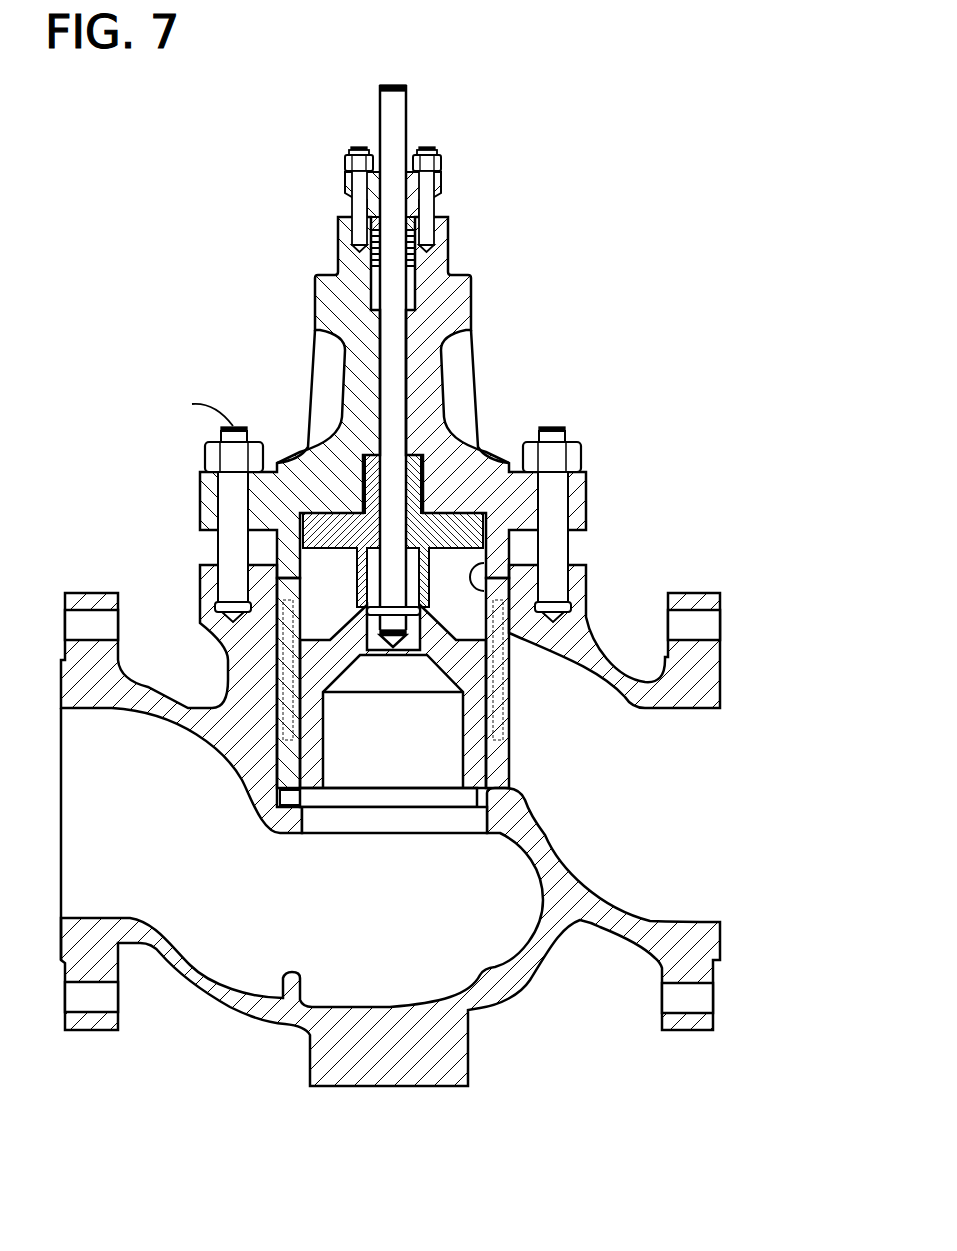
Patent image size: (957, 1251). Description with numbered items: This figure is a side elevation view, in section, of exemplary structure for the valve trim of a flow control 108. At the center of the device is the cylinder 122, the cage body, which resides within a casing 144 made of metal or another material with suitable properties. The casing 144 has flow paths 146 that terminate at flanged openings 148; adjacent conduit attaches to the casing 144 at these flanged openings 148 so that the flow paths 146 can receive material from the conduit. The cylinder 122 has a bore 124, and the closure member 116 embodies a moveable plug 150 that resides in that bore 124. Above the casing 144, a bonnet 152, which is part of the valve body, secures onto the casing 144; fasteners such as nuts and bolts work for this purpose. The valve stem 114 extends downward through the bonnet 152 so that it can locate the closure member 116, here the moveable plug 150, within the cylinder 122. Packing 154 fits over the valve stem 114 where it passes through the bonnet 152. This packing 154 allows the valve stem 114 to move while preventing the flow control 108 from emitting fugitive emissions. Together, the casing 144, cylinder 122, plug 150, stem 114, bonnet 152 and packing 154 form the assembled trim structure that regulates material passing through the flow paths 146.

The flow control 108 is at (655, 341).
The valve stem 114 is at (405, 90).
The closure member 116 is at (337, 538).
The cylinder 122 is at (484, 575).
The bore 124 is at (437, 528).
The casing 144 is at (373, 1062).
The flow paths 146 is at (652, 809).
The flanged openings 148 is at (100, 1022).
The moveable plug 150 is at (485, 728).
The bonnet 152 is at (468, 360).
The packing 154 is at (410, 250).